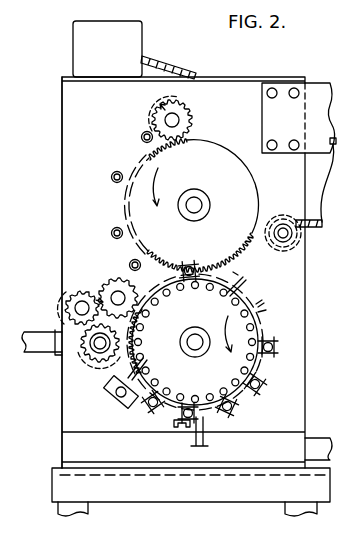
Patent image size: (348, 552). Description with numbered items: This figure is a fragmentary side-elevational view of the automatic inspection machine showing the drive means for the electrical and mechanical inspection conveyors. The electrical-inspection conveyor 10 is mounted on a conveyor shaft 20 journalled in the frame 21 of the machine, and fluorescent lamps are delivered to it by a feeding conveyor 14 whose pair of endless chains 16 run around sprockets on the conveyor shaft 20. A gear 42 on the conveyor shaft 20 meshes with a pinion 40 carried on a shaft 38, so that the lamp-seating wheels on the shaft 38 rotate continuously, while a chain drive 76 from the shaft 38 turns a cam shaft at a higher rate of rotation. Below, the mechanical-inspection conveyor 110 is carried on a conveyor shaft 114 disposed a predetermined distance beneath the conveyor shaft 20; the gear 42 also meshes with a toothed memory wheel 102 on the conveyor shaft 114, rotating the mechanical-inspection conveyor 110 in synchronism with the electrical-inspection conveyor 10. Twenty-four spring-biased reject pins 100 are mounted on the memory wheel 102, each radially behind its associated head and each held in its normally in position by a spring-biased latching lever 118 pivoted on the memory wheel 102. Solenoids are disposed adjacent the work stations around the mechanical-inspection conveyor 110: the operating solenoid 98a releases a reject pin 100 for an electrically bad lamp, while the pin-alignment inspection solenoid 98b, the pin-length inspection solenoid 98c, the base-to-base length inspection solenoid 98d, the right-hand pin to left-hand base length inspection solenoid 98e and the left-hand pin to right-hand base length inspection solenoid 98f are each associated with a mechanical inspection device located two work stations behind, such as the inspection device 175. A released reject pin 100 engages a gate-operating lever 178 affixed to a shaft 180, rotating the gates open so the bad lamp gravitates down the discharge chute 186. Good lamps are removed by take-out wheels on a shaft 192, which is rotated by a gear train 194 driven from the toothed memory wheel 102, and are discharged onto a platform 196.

The electrical-inspection conveyor 10 is at (56, 172).
The feeding conveyor 14 is at (320, 70).
The endless chains 16 is at (328, 150).
The conveyor shaft 20 is at (196, 206).
The frame 21 is at (62, 220).
The shaft 38 is at (176, 117).
The pinion 40 is at (190, 122).
The gear 42 is at (244, 193).
The chain drive 76 is at (163, 64).
The operating solenoid 98a is at (186, 266).
The pin-alignment inspection solenoid 98b is at (275, 344).
The pin-length inspection solenoid 98c is at (263, 386).
The base-to-base length inspection solenoid 98d is at (238, 405).
The right-hand pin to left-hand base length inspection solenoid 98e is at (173, 430).
The left-hand pin to right-hand base length inspection solenoid 98f is at (147, 407).
The spring-biased reject pin 100 is at (178, 291).
The toothed memory wheel 102 is at (238, 280).
The mechanical-inspection conveyor 110 is at (275, 369).
The conveyor shaft 114 is at (187, 345).
The spring-biased latching lever 118 is at (266, 312).
The inspection device 175 is at (208, 447).
The gate-operating lever 178 is at (127, 373).
The shaft 180 is at (112, 396).
The discharge chute 186 is at (312, 441).
The shaft 192 is at (97, 346).
The gear train 194 is at (96, 280).
The platform 196 is at (34, 340).